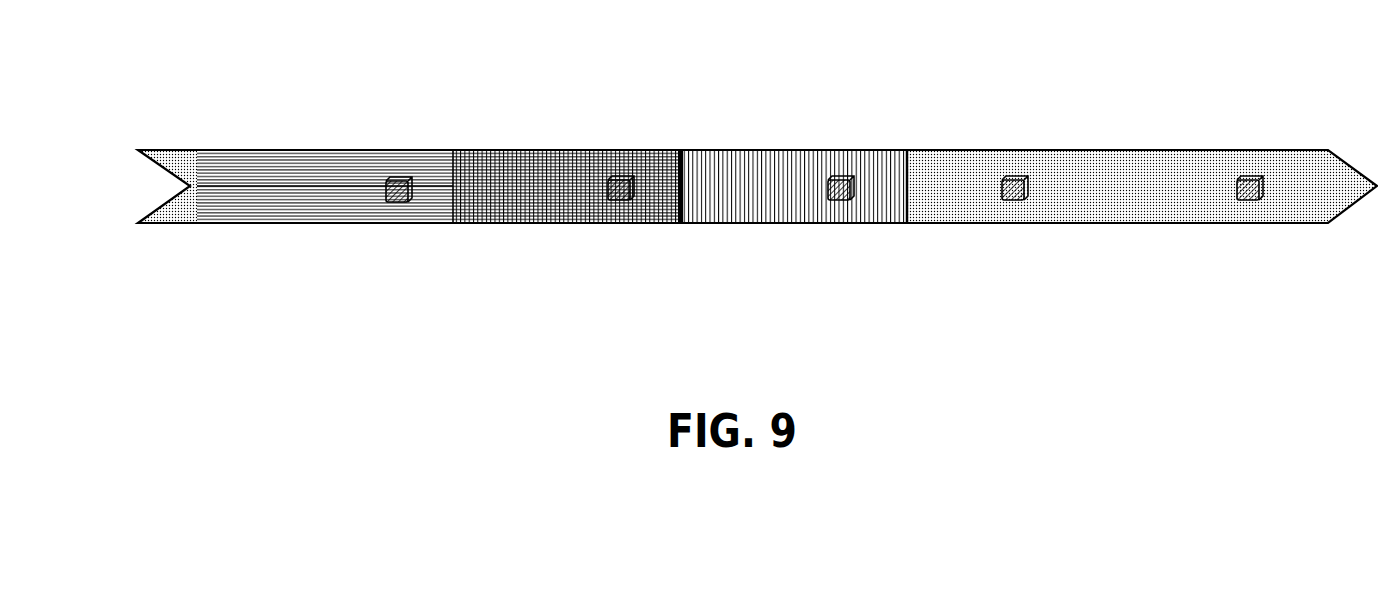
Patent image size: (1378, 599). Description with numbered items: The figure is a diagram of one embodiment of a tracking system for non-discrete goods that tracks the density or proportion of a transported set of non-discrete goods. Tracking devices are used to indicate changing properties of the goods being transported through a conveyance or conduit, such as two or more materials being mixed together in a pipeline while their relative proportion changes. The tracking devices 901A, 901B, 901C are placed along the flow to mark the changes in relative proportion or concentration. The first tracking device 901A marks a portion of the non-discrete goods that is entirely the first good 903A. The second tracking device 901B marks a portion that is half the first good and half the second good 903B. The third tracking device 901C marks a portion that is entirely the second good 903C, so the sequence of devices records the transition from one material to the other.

The first tracking device 901A is at (396, 177).
The second tracking device 901B is at (618, 176).
The third tracking device 901C is at (838, 176).
The first good 903A is at (313, 196).
The second good 903B is at (507, 200).
The second good 903C is at (708, 205).